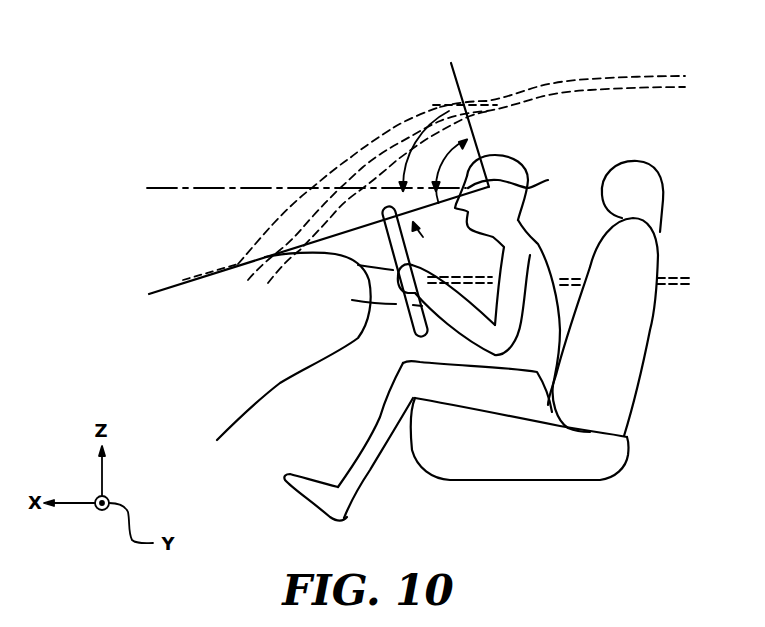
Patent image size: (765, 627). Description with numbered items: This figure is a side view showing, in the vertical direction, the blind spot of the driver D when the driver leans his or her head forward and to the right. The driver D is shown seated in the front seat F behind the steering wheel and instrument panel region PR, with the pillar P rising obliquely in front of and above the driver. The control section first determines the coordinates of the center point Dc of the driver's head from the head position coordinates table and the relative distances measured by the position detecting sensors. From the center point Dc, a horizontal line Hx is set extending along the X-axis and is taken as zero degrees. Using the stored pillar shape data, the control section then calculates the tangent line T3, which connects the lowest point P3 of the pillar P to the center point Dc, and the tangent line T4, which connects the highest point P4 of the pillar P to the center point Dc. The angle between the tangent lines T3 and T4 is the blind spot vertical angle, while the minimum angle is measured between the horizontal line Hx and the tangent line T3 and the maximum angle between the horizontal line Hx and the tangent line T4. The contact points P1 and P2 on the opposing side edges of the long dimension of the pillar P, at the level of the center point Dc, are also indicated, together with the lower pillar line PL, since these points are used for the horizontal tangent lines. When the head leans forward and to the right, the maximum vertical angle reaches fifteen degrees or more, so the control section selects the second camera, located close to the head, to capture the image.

The horizontal line Hx is at (164, 185).
The tangent line T3 is at (172, 297).
The tangent line T4 is at (458, 78).
The lowest point of the pillar P3 is at (230, 270).
The contact point P2 is at (313, 187).
The lower pillar line PL is at (273, 220).
The contact point P1 is at (347, 190).
The pillar P is at (368, 133).
The highest point of the pillar P4 is at (470, 92).
The instrument panel PR is at (294, 252).
The center point of the head Dc is at (524, 180).
The driver D is at (513, 154).
The front seat F is at (648, 331).